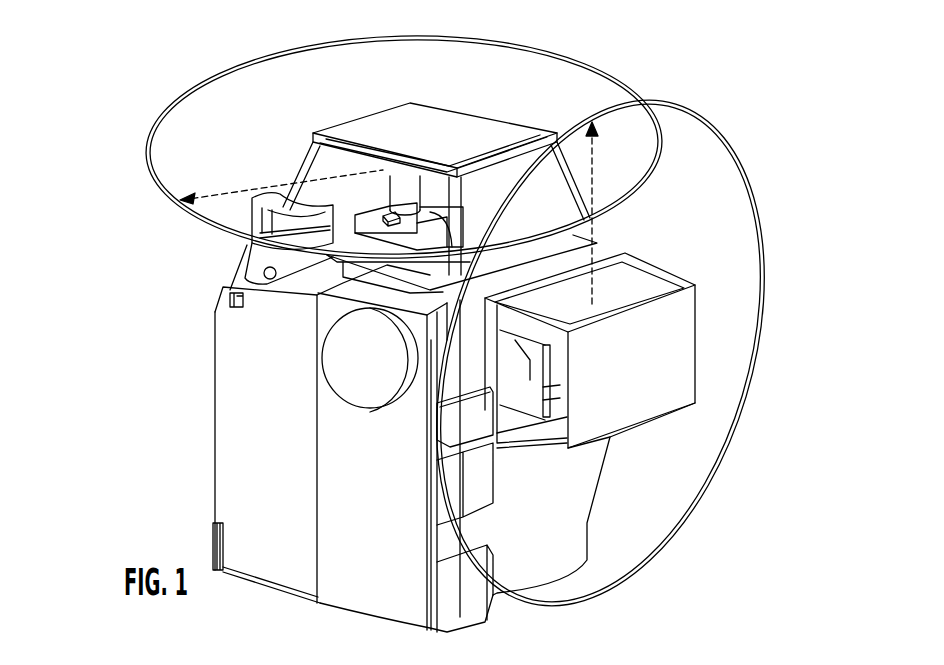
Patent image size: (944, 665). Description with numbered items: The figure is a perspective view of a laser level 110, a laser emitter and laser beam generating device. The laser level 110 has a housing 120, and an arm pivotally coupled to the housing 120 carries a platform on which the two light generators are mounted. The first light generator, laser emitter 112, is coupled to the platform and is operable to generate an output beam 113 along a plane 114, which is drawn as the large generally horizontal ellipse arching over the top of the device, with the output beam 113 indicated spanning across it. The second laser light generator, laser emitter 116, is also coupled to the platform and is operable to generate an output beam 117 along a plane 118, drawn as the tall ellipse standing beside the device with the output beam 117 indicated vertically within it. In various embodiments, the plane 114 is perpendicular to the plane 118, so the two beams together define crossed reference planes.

The laser level 110 is at (120, 233).
The laser emitter 112 is at (387, 193).
The output beam 113 is at (227, 187).
The plane 114 is at (523, 42).
The laser emitter 116 is at (546, 346).
The output beam 117 is at (600, 152).
The plane 118 is at (777, 218).
The housing 120 is at (208, 493).